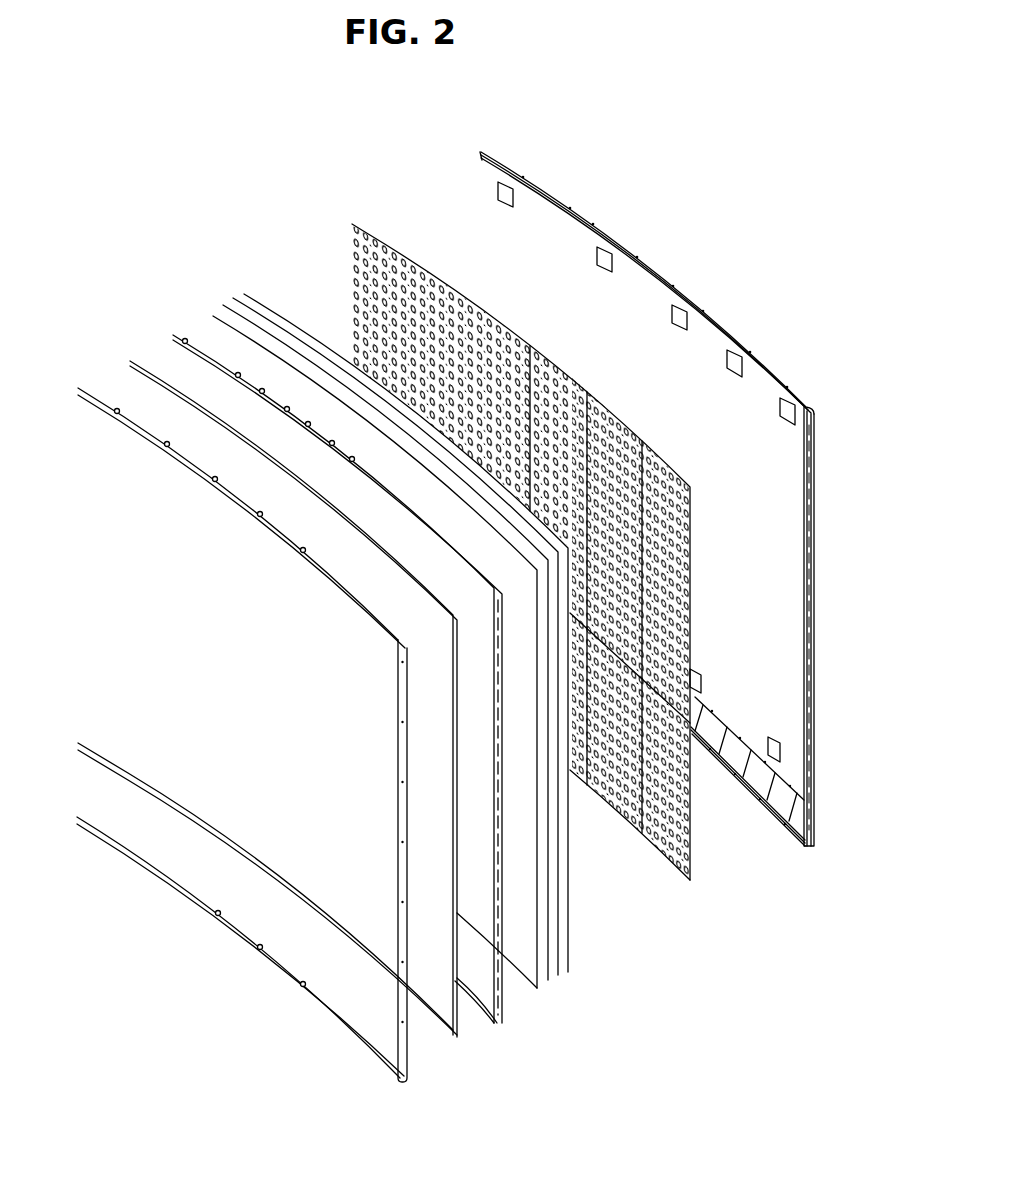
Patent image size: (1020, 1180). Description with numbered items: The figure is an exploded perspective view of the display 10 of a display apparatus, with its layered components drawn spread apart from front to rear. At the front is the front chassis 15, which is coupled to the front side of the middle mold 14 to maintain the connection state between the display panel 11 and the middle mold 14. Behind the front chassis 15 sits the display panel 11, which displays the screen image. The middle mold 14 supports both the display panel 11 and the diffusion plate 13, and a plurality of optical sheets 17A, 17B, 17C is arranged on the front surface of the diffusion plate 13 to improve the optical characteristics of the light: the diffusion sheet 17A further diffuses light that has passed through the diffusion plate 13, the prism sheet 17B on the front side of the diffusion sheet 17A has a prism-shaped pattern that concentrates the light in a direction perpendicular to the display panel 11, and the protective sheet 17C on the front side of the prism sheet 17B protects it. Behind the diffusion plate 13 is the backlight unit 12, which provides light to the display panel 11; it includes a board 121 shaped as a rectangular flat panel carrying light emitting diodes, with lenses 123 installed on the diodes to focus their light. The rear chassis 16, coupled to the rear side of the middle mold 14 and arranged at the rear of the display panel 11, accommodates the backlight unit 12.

The display 10 is at (213, 191).
The display panel 11 is at (445, 1050).
The backlight unit 12 is at (548, 556).
The board 121 is at (628, 820).
The lenses 123 is at (597, 783).
The diffusion plate 13 is at (583, 976).
The middle mold 14 is at (494, 1037).
The front chassis 15 is at (378, 1083).
The rear chassis 16 is at (825, 829).
The diffusion sheet 17A is at (557, 986).
The prism sheet 17B is at (541, 990).
The protective sheet 17C is at (527, 988).